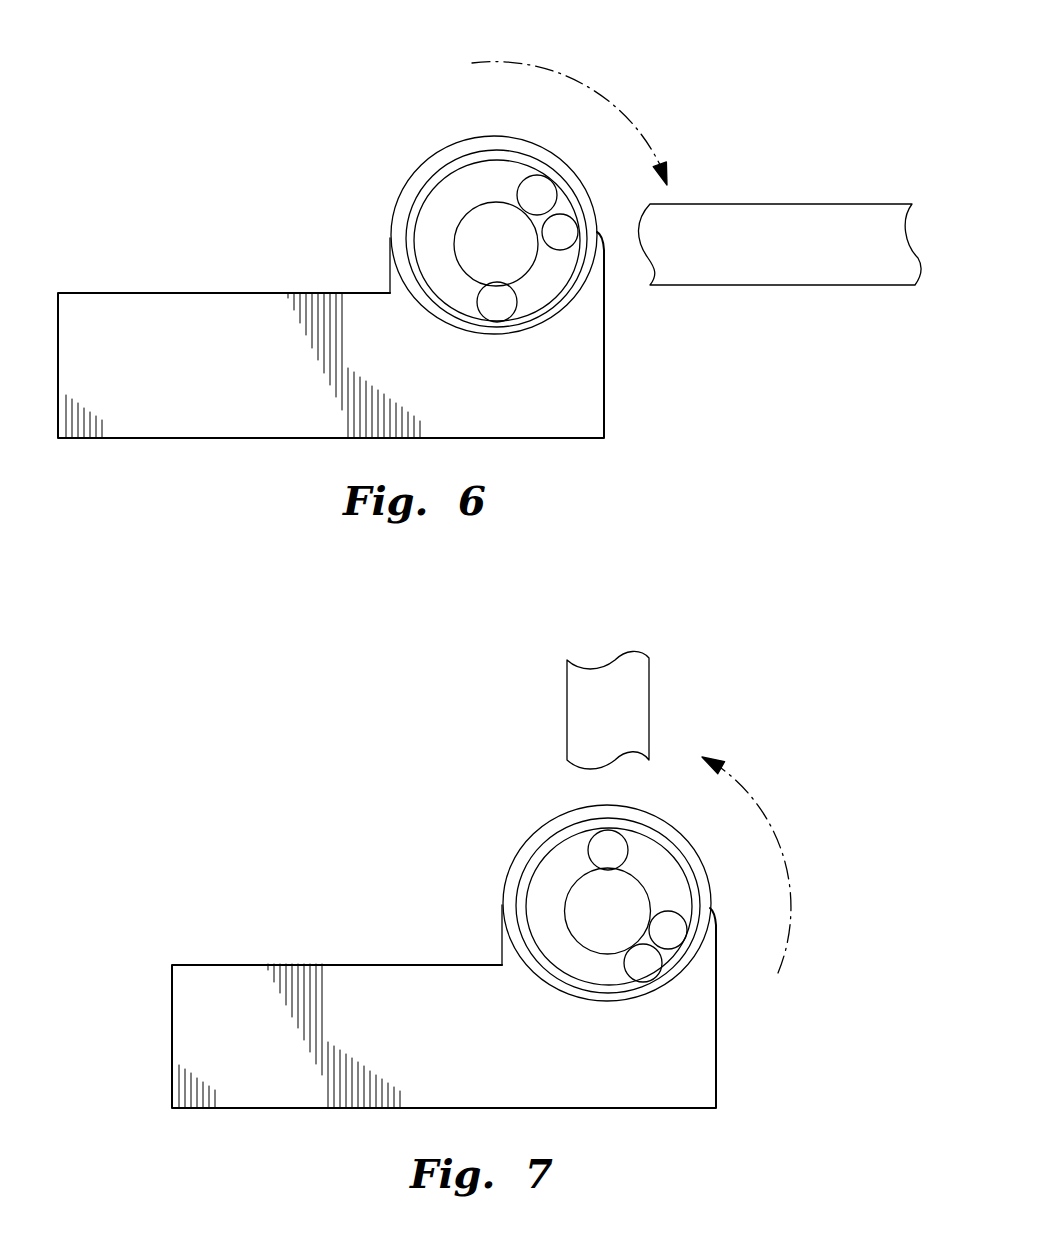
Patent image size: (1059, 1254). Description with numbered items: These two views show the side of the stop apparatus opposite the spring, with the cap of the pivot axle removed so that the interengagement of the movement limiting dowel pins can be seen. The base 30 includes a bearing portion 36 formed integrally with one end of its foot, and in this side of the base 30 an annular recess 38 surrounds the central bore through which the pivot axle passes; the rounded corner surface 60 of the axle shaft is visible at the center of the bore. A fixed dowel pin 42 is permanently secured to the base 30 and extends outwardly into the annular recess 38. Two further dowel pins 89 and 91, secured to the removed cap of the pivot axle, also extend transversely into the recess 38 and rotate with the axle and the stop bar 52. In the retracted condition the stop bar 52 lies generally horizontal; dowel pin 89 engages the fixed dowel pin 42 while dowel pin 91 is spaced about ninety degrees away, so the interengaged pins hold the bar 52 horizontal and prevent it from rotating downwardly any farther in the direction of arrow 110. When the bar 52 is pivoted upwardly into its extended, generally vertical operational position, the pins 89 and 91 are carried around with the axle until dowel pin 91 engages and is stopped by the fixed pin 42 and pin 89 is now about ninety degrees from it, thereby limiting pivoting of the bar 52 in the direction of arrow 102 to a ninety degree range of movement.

In FIG. 6, the base 30 is at (193, 293).
In FIG. 7, the base 30 is at (247, 1110).
In FIG. 6, the bearing portion 36 is at (418, 163).
In FIG. 7, the bearing portion 36 is at (530, 833).
In FIG. 6, the second annular recess 38 is at (522, 160).
In FIG. 7, the second annular recess 38 is at (660, 842).
In FIG. 6, the second dowel pin 42 is at (553, 231).
In FIG. 7, the second dowel pin 42 is at (663, 927).
In FIG. 6, the stop bar 52 is at (797, 203).
In FIG. 7, the stop bar 52 is at (650, 691).
In FIG. 6, the rounded corner surface 60 is at (475, 245).
In FIG. 7, the rounded corner surface 60 is at (588, 902).
In FIG. 6, the dowel pin 89 is at (538, 200).
In FIG. 7, the dowel pin 89 is at (597, 848).
In FIG. 6, the dowel pin 91 is at (497, 308).
In FIG. 7, the dowel pin 91 is at (645, 963).
In FIG. 7, the arrow 102 is at (777, 842).
In FIG. 6, the arrow 110 is at (603, 95).